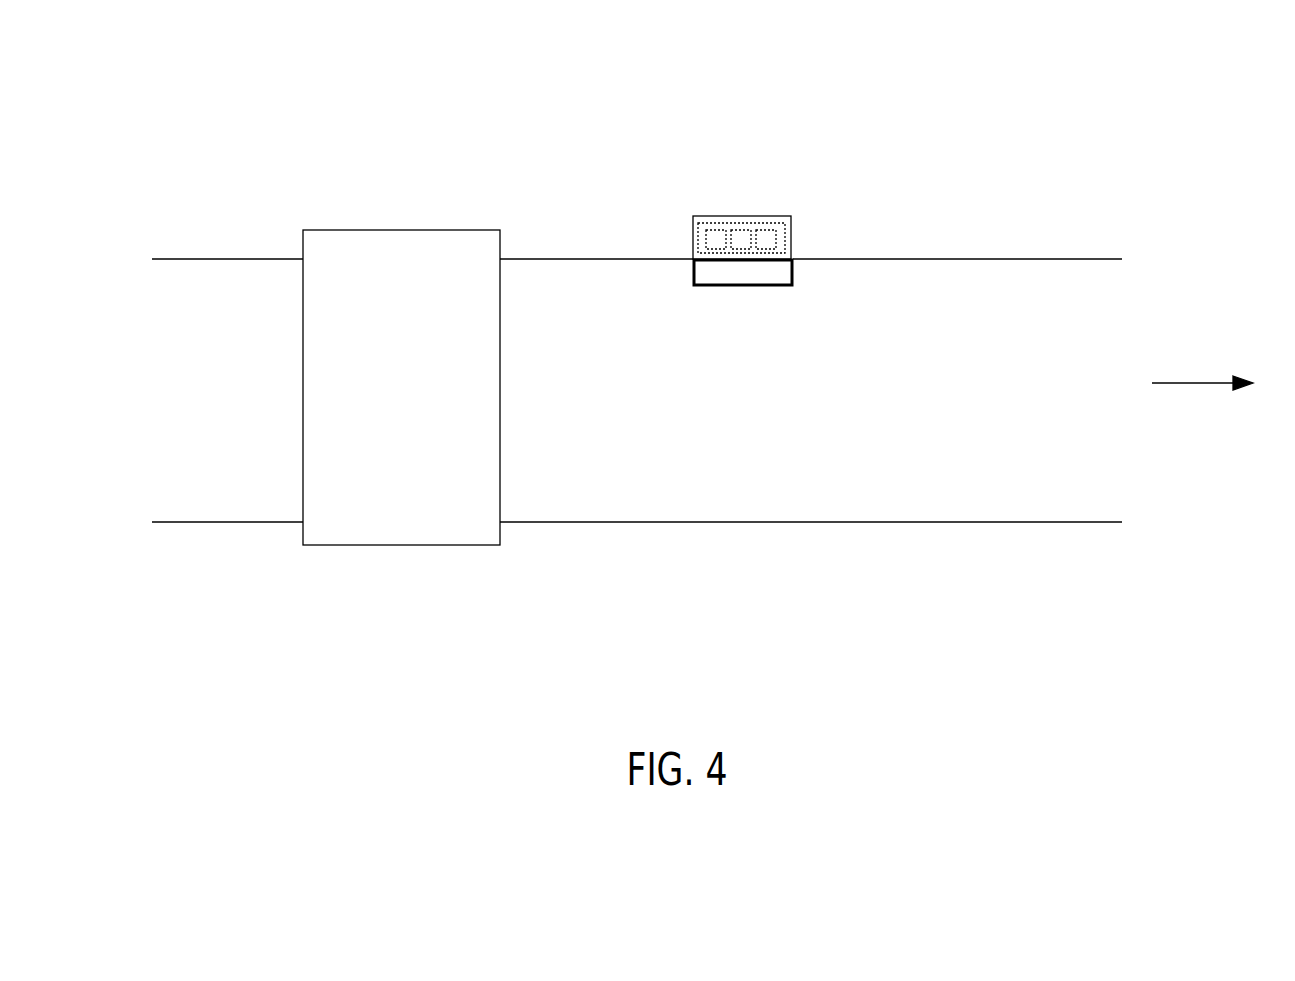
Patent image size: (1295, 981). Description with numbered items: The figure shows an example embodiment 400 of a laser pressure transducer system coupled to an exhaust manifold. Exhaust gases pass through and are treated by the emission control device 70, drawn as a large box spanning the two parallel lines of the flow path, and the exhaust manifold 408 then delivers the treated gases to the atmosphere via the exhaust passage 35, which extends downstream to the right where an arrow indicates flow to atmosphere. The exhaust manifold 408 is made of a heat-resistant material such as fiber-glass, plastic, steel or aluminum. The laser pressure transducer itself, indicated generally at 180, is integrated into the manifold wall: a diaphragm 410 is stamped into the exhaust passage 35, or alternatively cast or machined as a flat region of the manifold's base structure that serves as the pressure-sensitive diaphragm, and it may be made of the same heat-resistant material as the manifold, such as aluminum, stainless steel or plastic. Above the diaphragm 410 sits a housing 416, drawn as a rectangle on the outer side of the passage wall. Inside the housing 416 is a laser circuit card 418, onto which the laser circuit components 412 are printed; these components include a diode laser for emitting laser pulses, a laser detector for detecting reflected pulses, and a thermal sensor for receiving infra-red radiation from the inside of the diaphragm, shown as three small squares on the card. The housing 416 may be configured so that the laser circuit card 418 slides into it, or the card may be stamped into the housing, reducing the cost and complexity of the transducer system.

The embodiment of laser pressure transducer system 400 is at (1174, 63).
The exhaust gas sensor assembly 180 is at (747, 213).
The housing 416 is at (767, 215).
The laser circuit card 418 is at (693, 233).
The laser circuit components 412 is at (740, 237).
The diaphragm 410 is at (740, 287).
The exhaust manifold 408 is at (553, 260).
The exhaust passage 35 is at (1063, 258).
The emission control device 70 is at (391, 427).